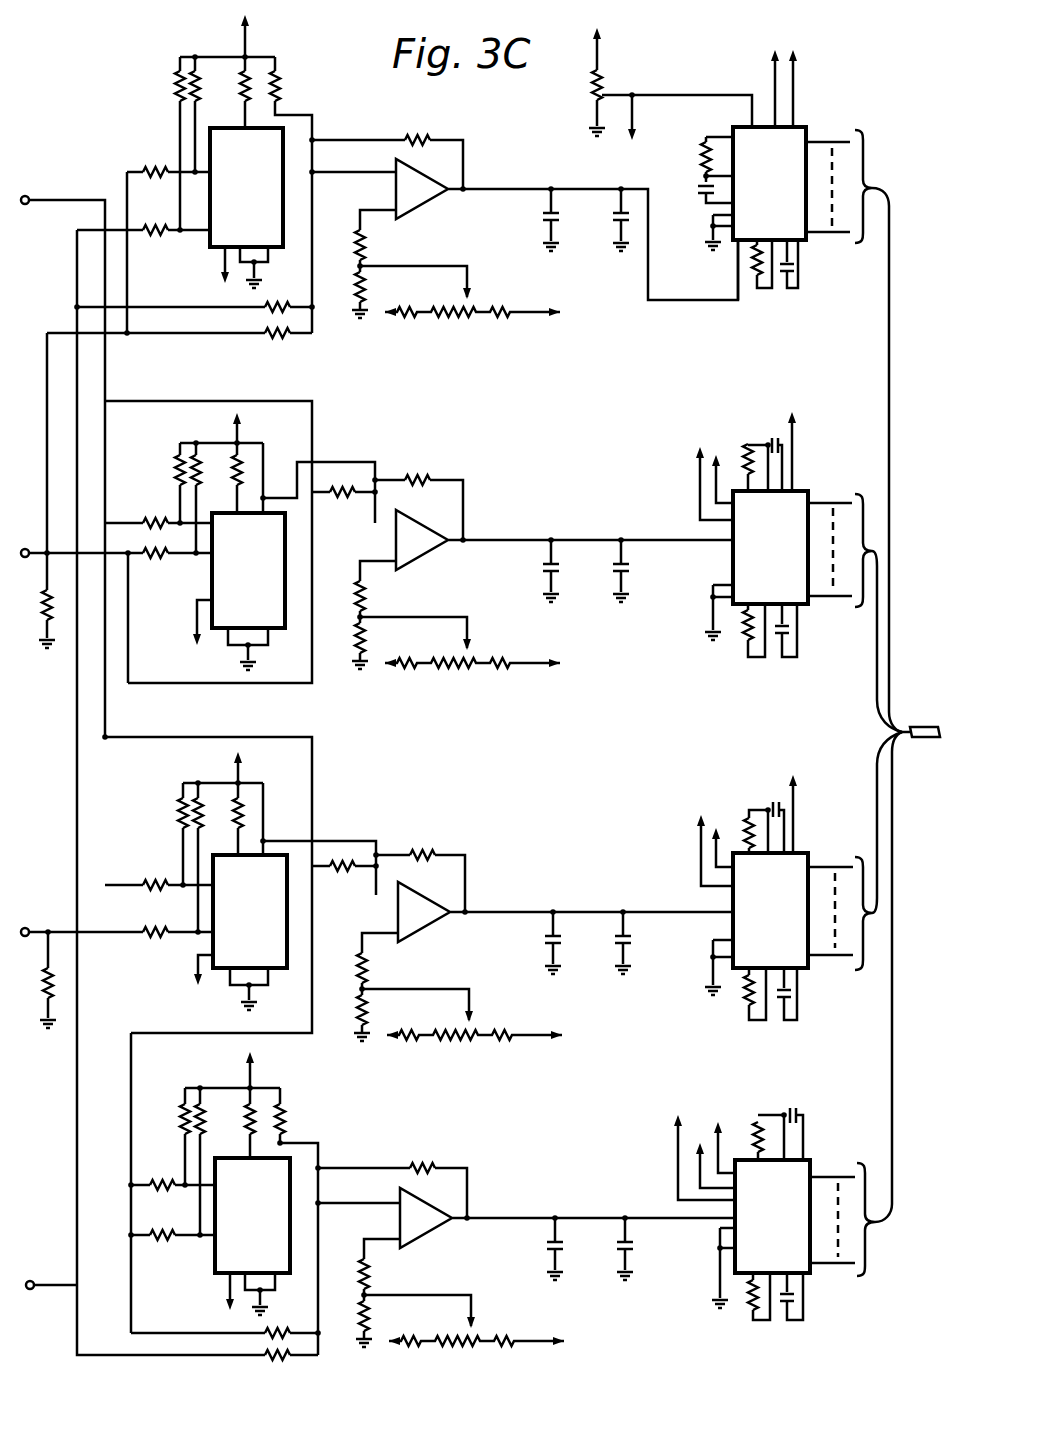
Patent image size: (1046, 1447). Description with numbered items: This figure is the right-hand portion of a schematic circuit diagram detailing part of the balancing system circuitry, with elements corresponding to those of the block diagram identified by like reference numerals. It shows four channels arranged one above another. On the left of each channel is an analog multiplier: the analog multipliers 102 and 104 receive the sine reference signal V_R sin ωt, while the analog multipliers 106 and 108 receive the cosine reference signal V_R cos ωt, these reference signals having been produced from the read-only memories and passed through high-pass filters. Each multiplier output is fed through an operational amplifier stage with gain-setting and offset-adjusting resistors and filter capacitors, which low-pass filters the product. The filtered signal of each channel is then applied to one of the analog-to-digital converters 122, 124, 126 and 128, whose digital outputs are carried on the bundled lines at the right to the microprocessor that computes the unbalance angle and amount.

The analog multiplier 102 is at (267, 586).
The analog multiplier 104 is at (269, 921).
The analog multiplier 106 is at (265, 201).
The analog multiplier 108 is at (271, 1226).
The analog-to-digital converter 122 is at (789, 562).
The analog-to-digital converter 124 is at (788, 199).
The analog-to-digital converter 126 is at (789, 923).
The analog-to-digital converter 128 is at (791, 1229).